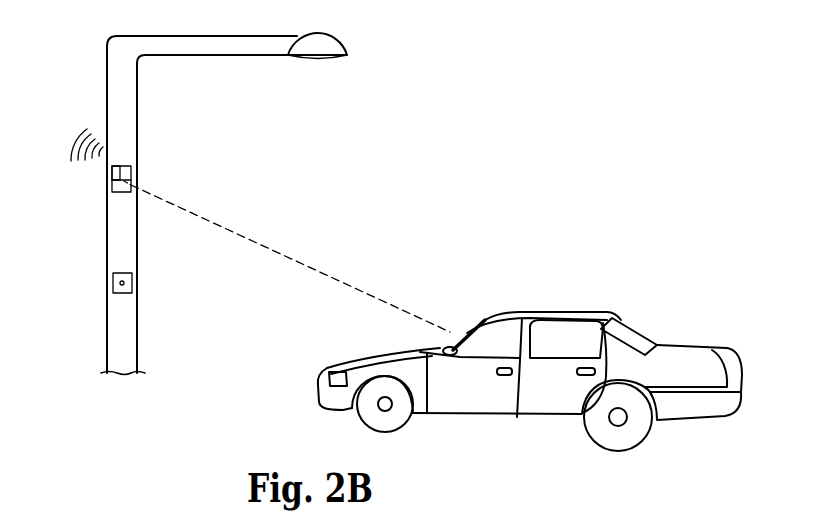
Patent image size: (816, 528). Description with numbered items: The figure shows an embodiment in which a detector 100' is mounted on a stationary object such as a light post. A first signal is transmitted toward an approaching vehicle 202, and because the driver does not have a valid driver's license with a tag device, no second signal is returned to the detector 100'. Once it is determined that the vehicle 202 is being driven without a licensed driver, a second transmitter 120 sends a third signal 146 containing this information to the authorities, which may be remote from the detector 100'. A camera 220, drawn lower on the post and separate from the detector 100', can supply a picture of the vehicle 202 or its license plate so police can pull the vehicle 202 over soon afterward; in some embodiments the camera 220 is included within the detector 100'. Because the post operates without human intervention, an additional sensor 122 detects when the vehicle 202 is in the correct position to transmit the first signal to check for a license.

The detector 100' is at (224, 204).
The second transmitter 120 is at (112, 171).
The additional sensor 122 is at (113, 191).
The third signal 146 is at (78, 128).
The camera 220 is at (113, 282).
The vehicle 202 is at (644, 324).